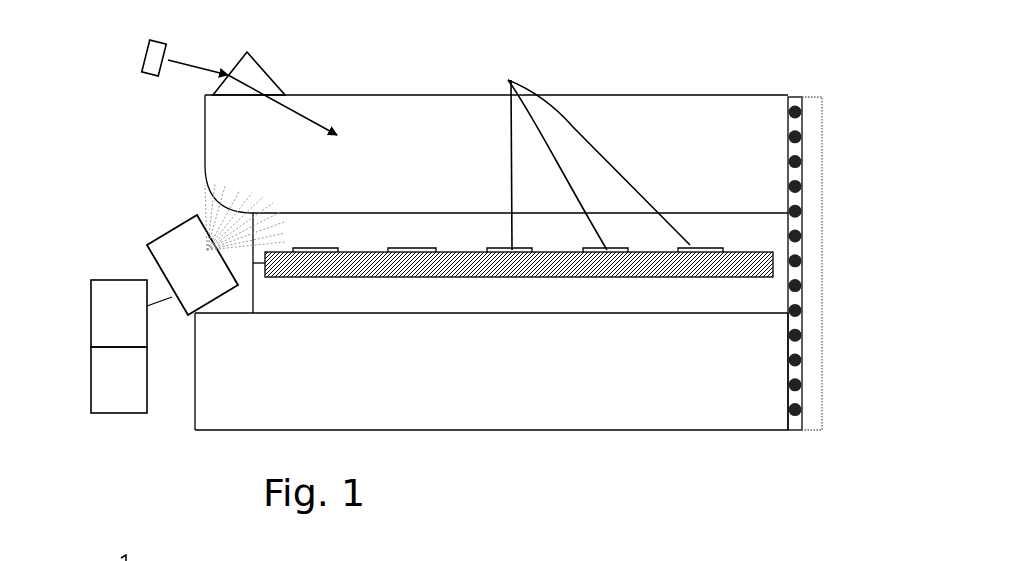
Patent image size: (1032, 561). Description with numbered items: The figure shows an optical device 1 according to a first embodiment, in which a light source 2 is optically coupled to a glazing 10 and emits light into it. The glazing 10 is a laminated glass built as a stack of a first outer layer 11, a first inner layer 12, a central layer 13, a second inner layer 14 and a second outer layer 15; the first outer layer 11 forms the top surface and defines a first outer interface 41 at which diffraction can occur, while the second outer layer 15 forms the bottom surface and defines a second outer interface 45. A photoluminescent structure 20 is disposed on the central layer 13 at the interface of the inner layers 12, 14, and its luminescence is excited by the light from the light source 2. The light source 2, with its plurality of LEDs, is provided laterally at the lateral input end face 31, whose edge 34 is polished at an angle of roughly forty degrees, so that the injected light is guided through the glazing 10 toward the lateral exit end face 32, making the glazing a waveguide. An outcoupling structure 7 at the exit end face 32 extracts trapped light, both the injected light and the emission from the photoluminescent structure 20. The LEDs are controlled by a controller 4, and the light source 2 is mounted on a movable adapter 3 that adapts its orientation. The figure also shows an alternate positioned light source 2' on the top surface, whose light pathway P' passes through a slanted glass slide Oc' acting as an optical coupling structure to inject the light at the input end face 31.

The optical device 1 is at (85, 135).
The light source 2 is at (200, 247).
The alternate positioned light source 2' is at (139, 44).
The movable adapter 3 is at (110, 278).
The controller 4 is at (110, 380).
The outcoupling structure 7 is at (798, 112).
The glazing 10 is at (317, 78).
The first outer layer 11 is at (676, 112).
The first inner layer 12 is at (768, 228).
The central layer 13 is at (753, 265).
The second inner layer 14 is at (760, 297).
The second outer layer 15 is at (752, 365).
The photoluminescent structure 20 is at (594, 151).
The lateral input end face 31 is at (202, 128).
The lateral exit end face 32 is at (788, 97).
The edge 34 is at (227, 200).
The first outer interface 41 is at (405, 88).
The second outer interface 45 is at (508, 430).
The light pathway P' is at (193, 43).
The slanted glass slide Oc' is at (249, 54).